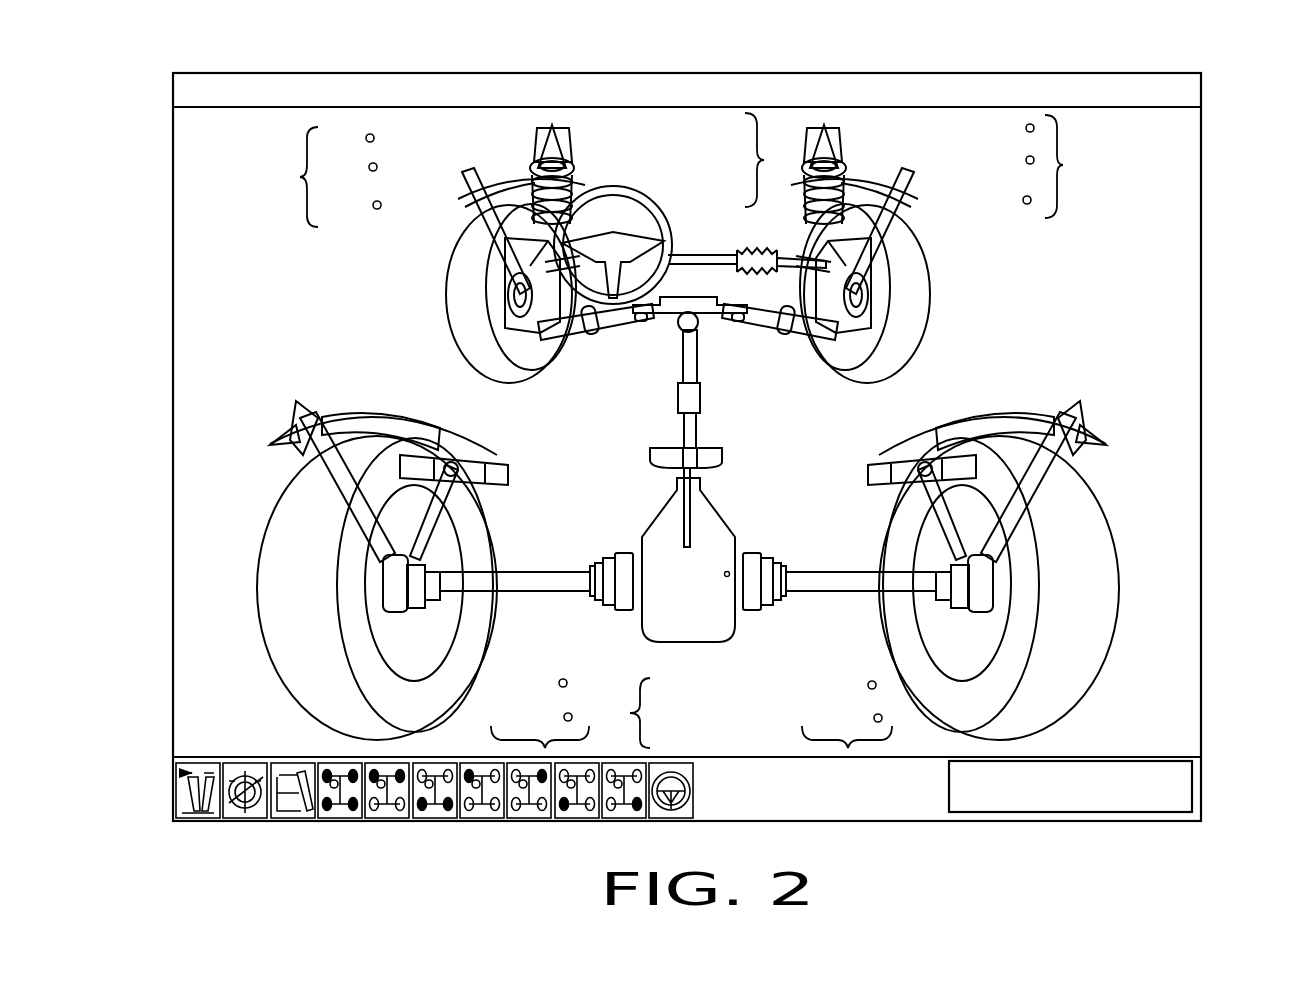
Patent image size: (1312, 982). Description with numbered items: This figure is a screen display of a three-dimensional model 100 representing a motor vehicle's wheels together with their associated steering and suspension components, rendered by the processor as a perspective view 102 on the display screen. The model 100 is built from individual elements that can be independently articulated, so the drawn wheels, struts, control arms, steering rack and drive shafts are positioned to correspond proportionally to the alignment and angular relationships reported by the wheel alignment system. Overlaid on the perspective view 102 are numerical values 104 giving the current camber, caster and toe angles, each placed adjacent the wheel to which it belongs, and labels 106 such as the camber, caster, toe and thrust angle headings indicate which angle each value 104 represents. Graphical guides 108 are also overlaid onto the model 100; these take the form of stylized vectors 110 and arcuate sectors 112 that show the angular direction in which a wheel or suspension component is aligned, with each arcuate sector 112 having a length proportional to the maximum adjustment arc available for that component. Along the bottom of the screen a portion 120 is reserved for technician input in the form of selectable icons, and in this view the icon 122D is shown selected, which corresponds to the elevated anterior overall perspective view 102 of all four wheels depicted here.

The three-dimensional model 100 is at (1125, 572).
The perspective view 102 is at (1125, 304).
The numerical values 104 is at (300, 177).
The labels 106 is at (764, 160).
The graphical guides 108 is at (532, 131).
The stylized vectors 110 is at (687, 563).
The arcuate sectors 112 is at (1014, 410).
The portion of the display screen 120 is at (168, 796).
The icon 122D is at (338, 820).